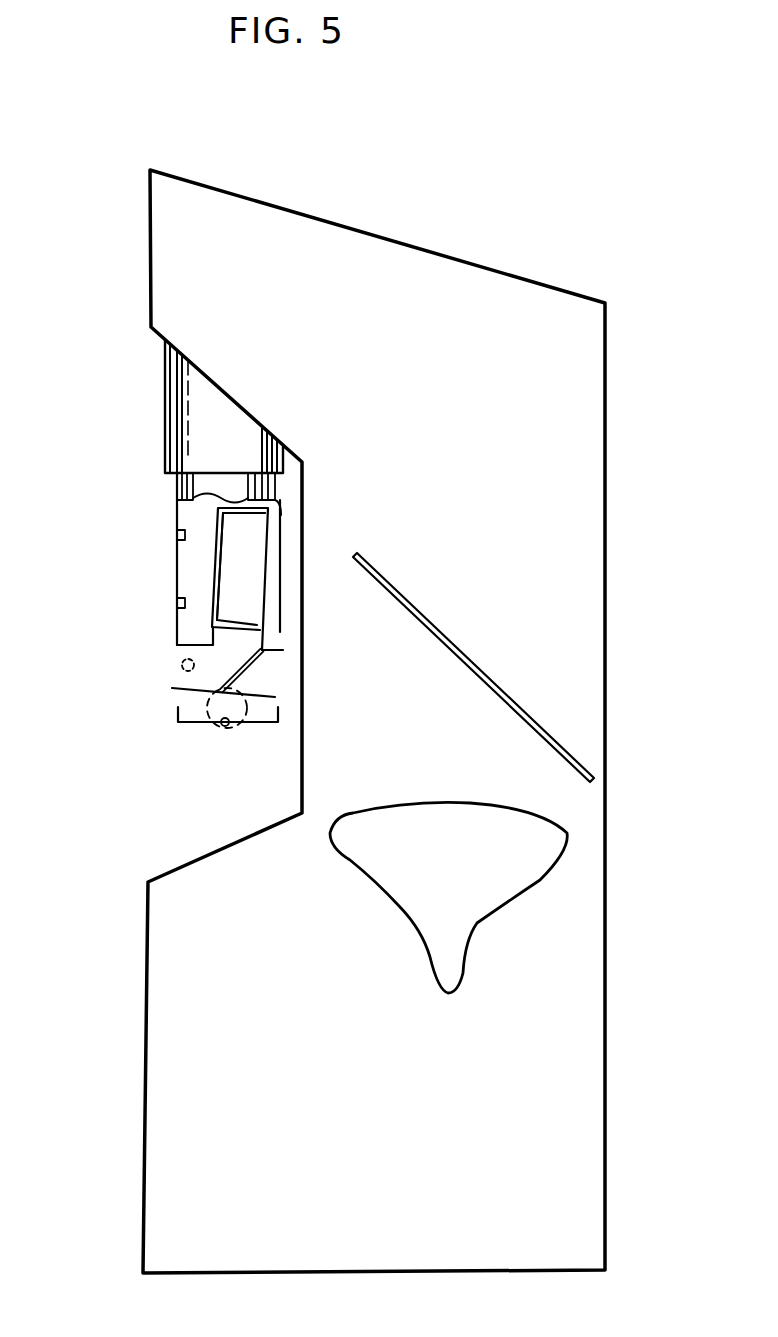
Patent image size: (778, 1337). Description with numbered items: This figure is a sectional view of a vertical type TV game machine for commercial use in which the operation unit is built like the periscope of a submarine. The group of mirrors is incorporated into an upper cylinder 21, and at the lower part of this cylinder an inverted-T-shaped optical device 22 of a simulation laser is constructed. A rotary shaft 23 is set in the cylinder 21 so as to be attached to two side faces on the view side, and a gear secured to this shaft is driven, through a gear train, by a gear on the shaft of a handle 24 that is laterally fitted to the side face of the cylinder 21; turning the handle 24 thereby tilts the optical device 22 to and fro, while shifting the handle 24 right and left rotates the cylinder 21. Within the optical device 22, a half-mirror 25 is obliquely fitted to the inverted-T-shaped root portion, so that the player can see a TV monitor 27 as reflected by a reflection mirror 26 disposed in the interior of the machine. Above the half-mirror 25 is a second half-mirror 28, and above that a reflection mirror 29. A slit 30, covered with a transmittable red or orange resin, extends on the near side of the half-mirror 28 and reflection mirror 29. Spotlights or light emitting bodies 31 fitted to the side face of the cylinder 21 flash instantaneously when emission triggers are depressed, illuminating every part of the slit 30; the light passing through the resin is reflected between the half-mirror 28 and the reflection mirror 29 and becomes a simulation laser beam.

The upper cylinder 21 is at (177, 488).
The optical device 22 is at (160, 642).
The rotary shaft 23 is at (182, 665).
The handle 24 is at (225, 727).
The half-mirror 25 is at (250, 668).
The reflection mirror 26 is at (555, 740).
The TV monitor 27 is at (495, 865).
The half-mirror 28 is at (242, 620).
The reflection mirror 29 is at (247, 512).
The slit 30 is at (220, 563).
The light emitting bodies 31 is at (177, 603).